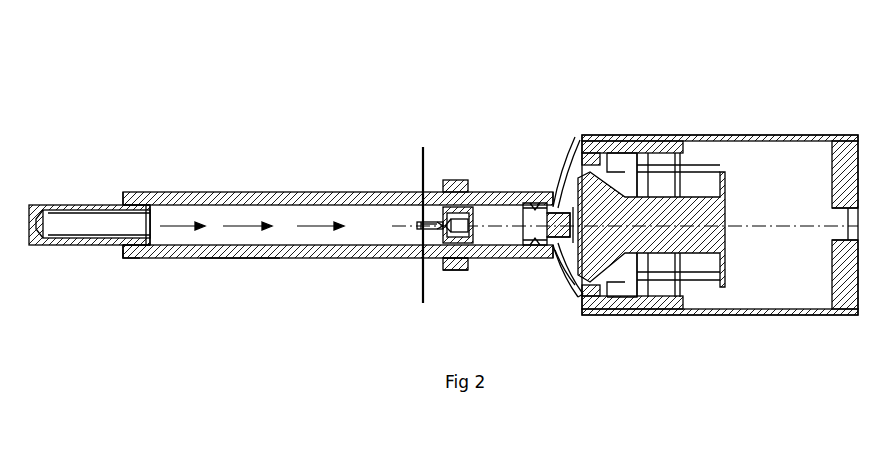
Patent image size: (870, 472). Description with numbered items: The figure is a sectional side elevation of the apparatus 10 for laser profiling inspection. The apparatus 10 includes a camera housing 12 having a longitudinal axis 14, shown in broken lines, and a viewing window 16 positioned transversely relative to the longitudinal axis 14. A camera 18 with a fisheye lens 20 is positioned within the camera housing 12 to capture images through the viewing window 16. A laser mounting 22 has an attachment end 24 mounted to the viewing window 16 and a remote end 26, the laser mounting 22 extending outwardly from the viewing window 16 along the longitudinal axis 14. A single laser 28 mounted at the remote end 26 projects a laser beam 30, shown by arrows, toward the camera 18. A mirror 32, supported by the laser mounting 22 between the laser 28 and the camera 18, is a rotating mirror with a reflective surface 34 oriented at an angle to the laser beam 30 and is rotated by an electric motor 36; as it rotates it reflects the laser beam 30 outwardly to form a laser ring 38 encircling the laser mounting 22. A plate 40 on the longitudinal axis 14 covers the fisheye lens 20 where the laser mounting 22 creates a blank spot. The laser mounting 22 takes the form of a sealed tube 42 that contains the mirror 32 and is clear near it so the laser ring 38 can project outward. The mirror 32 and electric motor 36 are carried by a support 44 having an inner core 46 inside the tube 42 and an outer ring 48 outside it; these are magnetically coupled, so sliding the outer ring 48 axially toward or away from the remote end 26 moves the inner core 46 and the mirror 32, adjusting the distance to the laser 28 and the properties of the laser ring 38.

The apparatus 10 is at (443, 78).
The camera housing 12 is at (745, 135).
The longitudinal axis 14 is at (778, 226).
The viewing window 16 is at (562, 265).
The camera 18 is at (645, 238).
The fisheye lens 20 is at (580, 198).
The laser mounting 22 is at (222, 192).
The attachment end 24 is at (537, 205).
The remote end 26 is at (140, 258).
The laser 28 is at (72, 205).
The laser beam 30 is at (170, 224).
The mirror 32 is at (425, 229).
The reflective surface 34 is at (420, 223).
The electric motor 36 is at (466, 229).
The laser ring 38 is at (423, 147).
The plate 40 is at (578, 297).
The tube 42 is at (240, 258).
The support 44 is at (453, 178).
The inner core 46 is at (473, 220).
The outer ring 48 is at (468, 268).